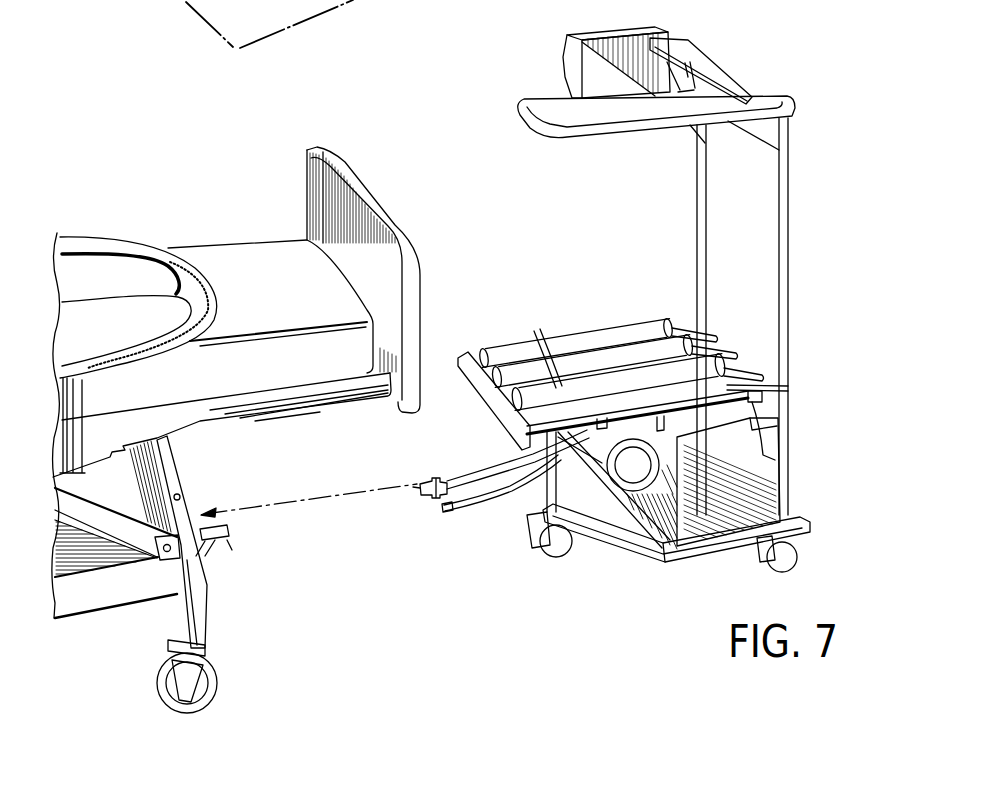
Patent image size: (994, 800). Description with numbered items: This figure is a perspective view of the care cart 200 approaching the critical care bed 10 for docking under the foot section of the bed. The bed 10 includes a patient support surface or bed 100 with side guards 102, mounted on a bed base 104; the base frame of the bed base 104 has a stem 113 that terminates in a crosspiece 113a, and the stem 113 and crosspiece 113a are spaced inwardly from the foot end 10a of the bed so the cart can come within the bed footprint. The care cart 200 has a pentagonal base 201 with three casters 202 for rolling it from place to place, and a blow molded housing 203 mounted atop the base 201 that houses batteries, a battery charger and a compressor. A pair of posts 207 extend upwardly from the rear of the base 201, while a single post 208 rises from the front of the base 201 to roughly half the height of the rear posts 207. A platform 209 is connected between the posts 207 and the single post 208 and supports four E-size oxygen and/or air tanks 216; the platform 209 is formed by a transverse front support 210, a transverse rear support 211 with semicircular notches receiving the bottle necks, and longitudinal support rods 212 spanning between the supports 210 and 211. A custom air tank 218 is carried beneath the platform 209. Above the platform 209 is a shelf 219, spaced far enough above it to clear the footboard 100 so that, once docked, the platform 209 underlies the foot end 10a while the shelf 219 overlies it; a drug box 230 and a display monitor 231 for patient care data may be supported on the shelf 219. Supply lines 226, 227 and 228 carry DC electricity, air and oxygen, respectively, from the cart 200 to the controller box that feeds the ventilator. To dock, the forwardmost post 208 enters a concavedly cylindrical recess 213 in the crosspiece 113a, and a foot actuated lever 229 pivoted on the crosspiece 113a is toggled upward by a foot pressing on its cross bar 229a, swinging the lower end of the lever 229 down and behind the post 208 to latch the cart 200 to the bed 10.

The critical care bed assembly 10 is at (191, 157).
The foot end of the bed 10a is at (291, 219).
The patient support surface or bed 100 is at (376, 192).
The side guards 102 is at (96, 236).
The bed base 104 is at (148, 606).
The stem 113 is at (79, 610).
The crosspiece 113a is at (208, 620).
The concavedly cylindrical recess 213 is at (180, 496).
The foot actuated lever 229 is at (223, 546).
The cross bar 229a is at (229, 532).
The care cart 200 is at (797, 80).
The pentagonal base 201 is at (805, 520).
The casters 202 is at (545, 566).
The blow molded housing 203 is at (662, 565).
The posts 207 is at (697, 223).
The single post 208 is at (543, 490).
The platform 209 is at (493, 410).
The transverse front support 210 is at (462, 357).
The transverse rear support 211 is at (762, 401).
The longitudinal support rods 212 is at (783, 391).
The oxygen and/or air tanks 216 is at (538, 340).
The custom air tank 218 is at (672, 483).
The shelf 219 is at (537, 100).
The supply line 226 is at (447, 510).
The supply line 227 is at (440, 497).
The supply line 228 is at (421, 485).
The drug box 230 is at (583, 32).
The display monitor 231 is at (693, 43).